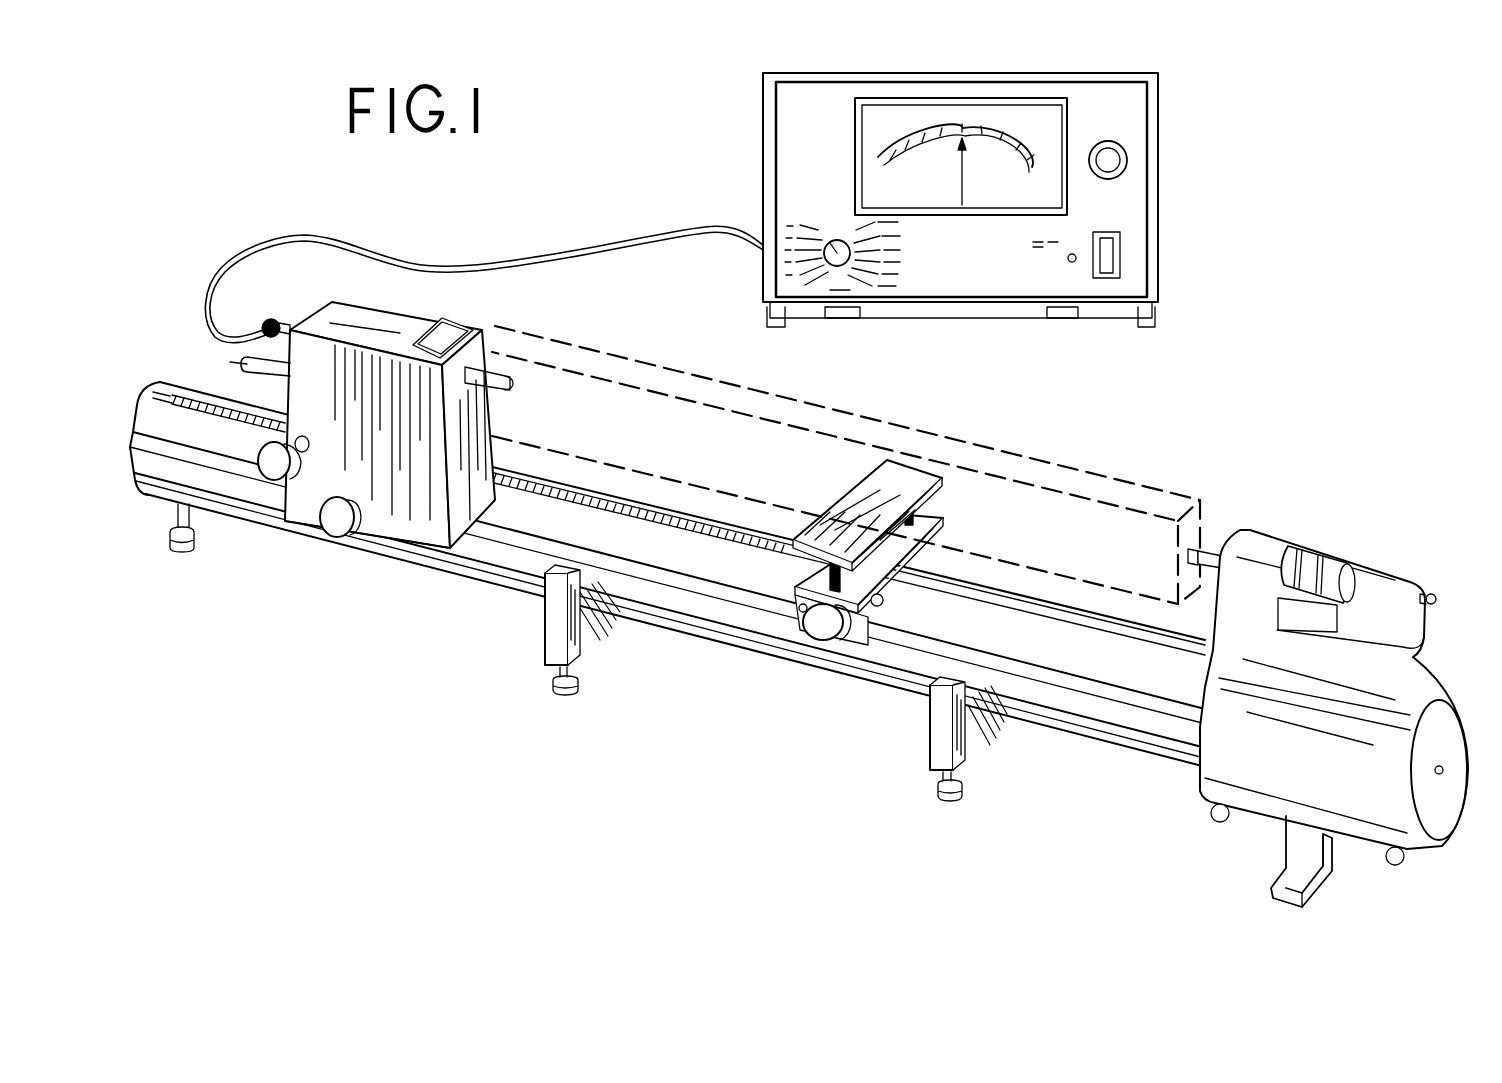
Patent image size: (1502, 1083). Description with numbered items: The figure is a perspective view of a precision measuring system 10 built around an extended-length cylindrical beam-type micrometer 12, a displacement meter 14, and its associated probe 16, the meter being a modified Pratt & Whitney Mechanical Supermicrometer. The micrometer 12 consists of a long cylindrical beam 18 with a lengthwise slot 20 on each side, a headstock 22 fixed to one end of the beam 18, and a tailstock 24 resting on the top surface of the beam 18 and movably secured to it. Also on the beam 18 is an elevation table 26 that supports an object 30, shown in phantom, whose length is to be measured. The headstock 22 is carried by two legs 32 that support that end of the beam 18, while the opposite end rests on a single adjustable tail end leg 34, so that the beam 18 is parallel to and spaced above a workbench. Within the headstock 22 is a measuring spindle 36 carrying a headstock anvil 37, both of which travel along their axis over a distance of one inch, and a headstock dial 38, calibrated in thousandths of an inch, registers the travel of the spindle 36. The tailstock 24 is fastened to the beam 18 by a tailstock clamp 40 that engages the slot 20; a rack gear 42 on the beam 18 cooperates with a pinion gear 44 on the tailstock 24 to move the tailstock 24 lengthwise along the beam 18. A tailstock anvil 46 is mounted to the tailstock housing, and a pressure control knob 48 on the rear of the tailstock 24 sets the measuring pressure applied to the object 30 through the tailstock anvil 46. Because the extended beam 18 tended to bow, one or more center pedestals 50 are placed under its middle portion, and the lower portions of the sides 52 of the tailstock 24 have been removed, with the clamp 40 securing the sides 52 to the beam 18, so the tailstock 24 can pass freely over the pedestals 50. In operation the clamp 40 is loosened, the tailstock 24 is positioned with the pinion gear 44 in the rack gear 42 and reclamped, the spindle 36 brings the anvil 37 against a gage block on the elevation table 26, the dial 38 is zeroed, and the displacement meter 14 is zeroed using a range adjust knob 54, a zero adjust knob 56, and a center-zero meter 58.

The precision measuring system 10 is at (218, 646).
The extended-length cylindrical beam-type micrometer 12 is at (692, 713).
The displacement meter 14 is at (1188, 216).
The probe 16 is at (222, 370).
The cylindrical beam 18 is at (743, 637).
The lengthwise slot 20 is at (712, 590).
The headstock 22 is at (1430, 648).
The tailstock 24 is at (385, 533).
The elevation table 26 is at (893, 485).
The object 30 is at (1030, 455).
The legs 32 is at (1288, 845).
The adjustable tail end leg 34 is at (178, 510).
The measuring spindle 36 is at (1208, 555).
The headstock anvil 37 is at (1195, 548).
The headstock dial 38 is at (1300, 548).
The tailstock clamp 40 is at (337, 520).
The rack gear 42 is at (540, 486).
The pinion gear 44 is at (274, 465).
The tailstock anvil 46 is at (506, 375).
The pressure control knob 48 is at (276, 318).
The center pedestal 50 is at (557, 645).
The sides of the tailstock 52 is at (417, 528).
The range adjust knob 54 is at (845, 258).
The zero adjust knob 56 is at (1118, 158).
The center-zero meter 58 is at (995, 190).